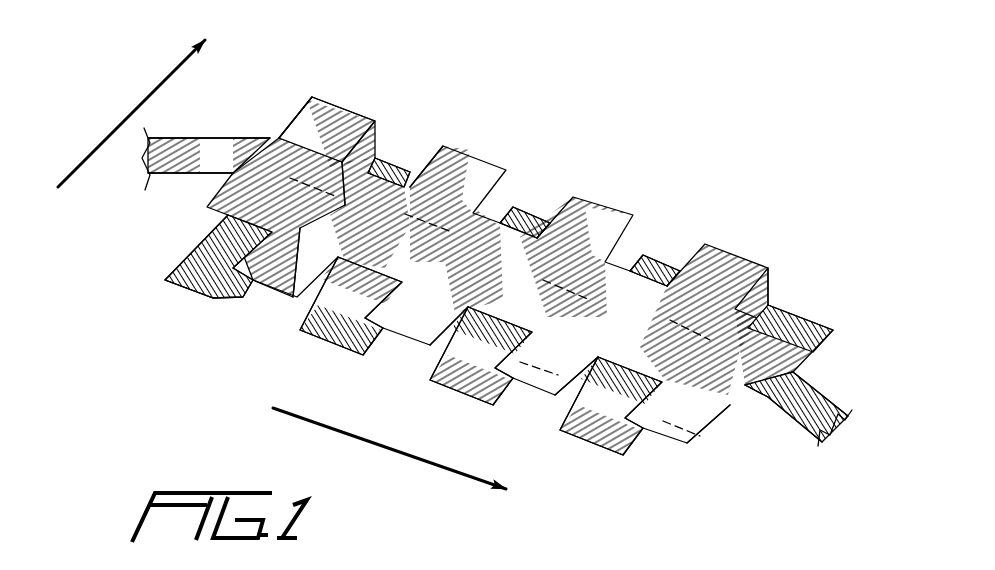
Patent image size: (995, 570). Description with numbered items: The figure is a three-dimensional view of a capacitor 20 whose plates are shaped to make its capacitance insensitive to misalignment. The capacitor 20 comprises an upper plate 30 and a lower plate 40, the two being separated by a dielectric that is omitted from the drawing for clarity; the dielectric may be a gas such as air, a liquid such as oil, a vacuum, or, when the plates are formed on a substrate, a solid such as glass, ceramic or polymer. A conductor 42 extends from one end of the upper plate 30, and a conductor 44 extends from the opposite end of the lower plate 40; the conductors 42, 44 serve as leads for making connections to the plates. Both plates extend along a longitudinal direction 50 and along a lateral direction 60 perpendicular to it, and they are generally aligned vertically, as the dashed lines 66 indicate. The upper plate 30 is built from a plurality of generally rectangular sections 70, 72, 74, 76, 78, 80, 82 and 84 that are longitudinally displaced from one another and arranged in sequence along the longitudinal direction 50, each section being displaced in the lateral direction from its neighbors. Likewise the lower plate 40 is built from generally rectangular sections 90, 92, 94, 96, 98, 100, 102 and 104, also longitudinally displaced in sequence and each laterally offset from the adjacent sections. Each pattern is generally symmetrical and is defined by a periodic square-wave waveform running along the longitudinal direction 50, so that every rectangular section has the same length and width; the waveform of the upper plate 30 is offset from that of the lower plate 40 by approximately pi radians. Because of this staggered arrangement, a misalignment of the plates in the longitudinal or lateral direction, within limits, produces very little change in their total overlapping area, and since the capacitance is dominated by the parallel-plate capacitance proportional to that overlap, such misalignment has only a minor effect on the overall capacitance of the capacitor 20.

The capacitor 20 is at (506, 273).
The upper plate 30 is at (343, 133).
The lower plate 40 is at (190, 290).
The conductor 42 is at (188, 137).
The conductor 44 is at (800, 415).
The longitudinal direction 50 is at (405, 458).
The lateral direction 60 is at (143, 98).
The dashed lines 66 is at (378, 160).
The generally rectangular section 70 is at (323, 162).
The generally rectangular section 72 is at (318, 255).
The generally rectangular section 74 is at (408, 253).
The generally rectangular section 76 is at (438, 317).
The generally rectangular section 78 is at (612, 240).
The generally rectangular section 80 is at (569, 361).
The generally rectangular section 82 is at (724, 316).
The generally rectangular section 84 is at (703, 405).
The generally rectangular section 90 is at (233, 262).
The generally rectangular section 92 is at (423, 177).
The generally rectangular section 94 is at (366, 308).
The generally rectangular section 96 is at (512, 220).
The generally rectangular section 98 is at (493, 361).
The generally rectangular section 100 is at (645, 265).
The generally rectangular section 102 is at (639, 393).
The generally rectangular section 104 is at (817, 333).